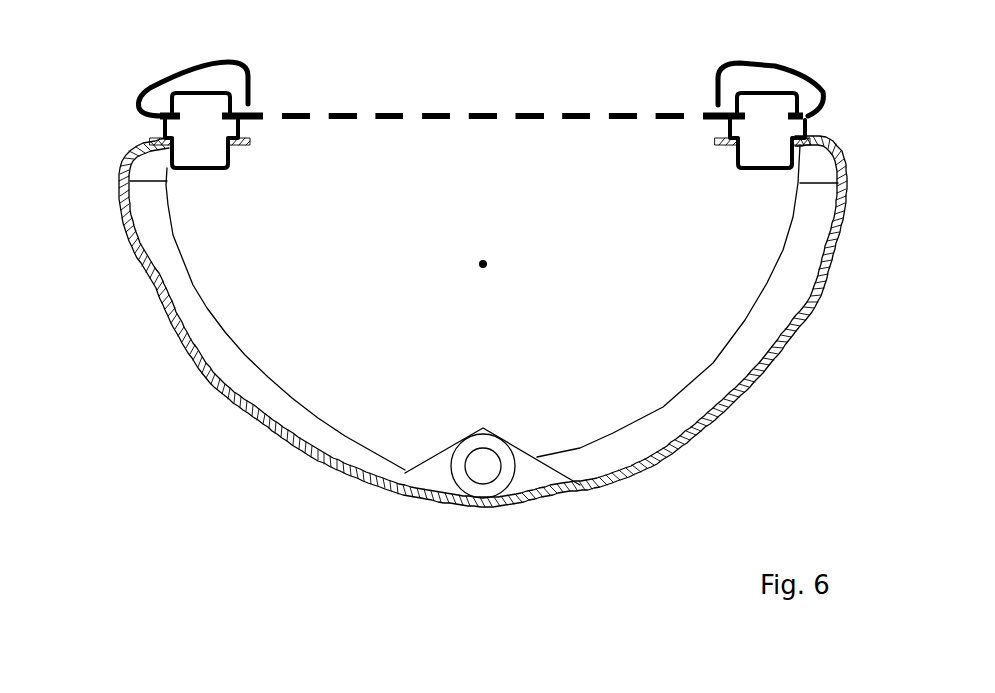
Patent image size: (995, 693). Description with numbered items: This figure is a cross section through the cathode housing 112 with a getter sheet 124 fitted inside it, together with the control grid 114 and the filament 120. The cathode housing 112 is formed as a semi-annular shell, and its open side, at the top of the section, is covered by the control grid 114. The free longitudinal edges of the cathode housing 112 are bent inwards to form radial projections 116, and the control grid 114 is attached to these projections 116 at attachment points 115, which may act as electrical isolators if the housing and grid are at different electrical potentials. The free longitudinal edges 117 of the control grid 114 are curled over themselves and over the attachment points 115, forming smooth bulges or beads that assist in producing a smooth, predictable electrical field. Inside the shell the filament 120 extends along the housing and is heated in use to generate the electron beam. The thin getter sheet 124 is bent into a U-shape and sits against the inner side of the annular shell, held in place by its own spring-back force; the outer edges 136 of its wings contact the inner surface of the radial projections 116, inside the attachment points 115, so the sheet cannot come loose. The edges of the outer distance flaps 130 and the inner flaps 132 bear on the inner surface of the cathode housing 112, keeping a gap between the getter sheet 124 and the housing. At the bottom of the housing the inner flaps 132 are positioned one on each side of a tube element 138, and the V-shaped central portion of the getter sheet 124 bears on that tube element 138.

The cathode housing 112 is at (210, 383).
The control grid 114 is at (480, 112).
The attachment points 115 is at (763, 123).
The radial projections 116 is at (808, 138).
The free longitudinal edges of the control grid 117 is at (787, 72).
The filament 120 is at (486, 264).
The getter sheet 124 is at (283, 397).
The outer distance flap 130 is at (153, 183).
The inner flap 132 is at (417, 480).
The outer edges of the wings 136 is at (163, 143).
The tube element 138 is at (527, 480).